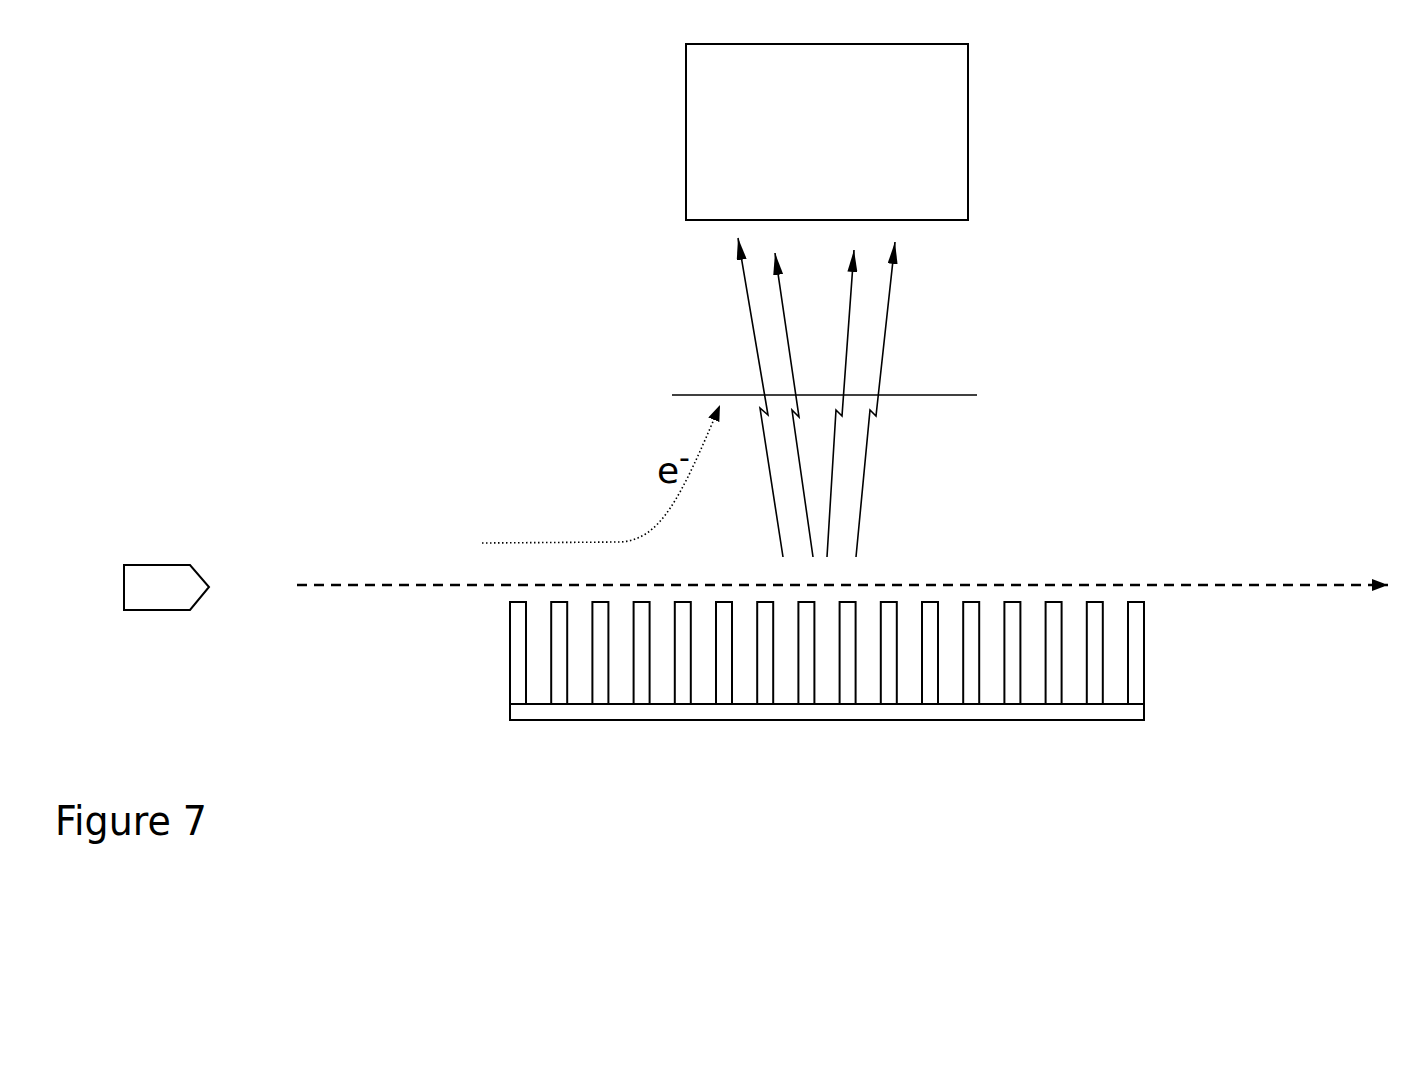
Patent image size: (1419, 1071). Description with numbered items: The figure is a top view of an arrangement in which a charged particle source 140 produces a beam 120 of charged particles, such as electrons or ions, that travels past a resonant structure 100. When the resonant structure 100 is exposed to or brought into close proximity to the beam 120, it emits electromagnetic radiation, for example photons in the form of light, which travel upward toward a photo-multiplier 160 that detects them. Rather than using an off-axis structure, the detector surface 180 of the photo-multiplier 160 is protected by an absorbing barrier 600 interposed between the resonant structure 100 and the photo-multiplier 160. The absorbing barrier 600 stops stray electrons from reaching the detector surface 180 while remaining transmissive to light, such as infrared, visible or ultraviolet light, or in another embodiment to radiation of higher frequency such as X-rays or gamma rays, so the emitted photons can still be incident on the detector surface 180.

The resonant structure 100 is at (1144, 720).
The beam of charged particles 120 is at (1253, 585).
The charged particle source 140 is at (160, 610).
The photo-multiplier 160 is at (968, 102).
The detector surface 180 is at (938, 222).
The absorbing barrier 600 is at (970, 395).